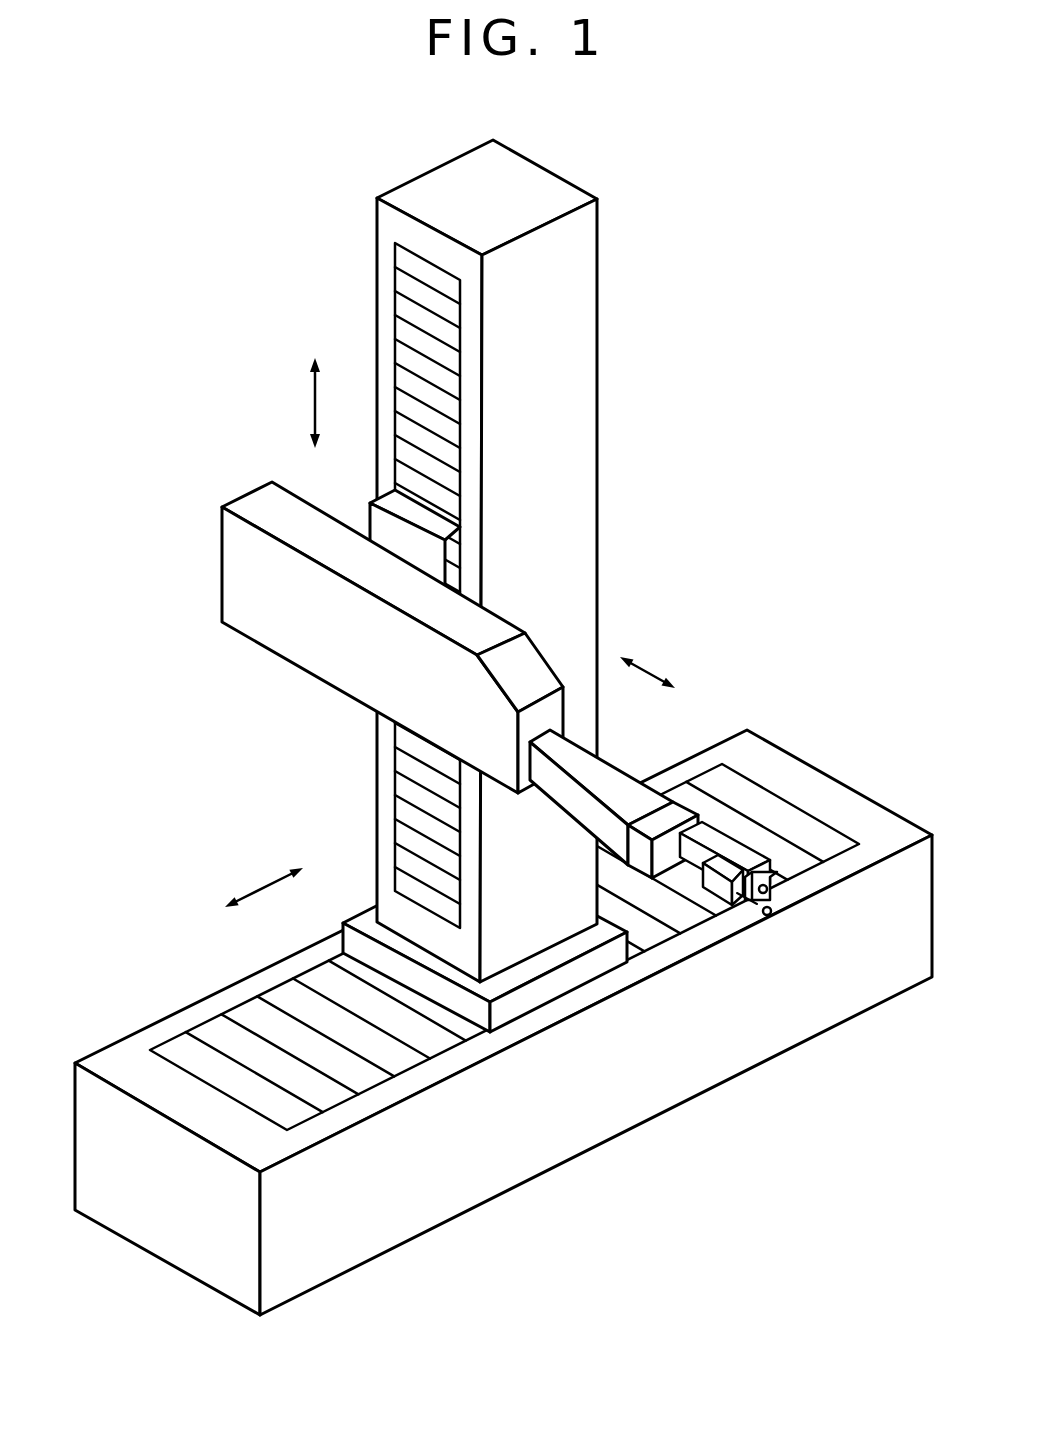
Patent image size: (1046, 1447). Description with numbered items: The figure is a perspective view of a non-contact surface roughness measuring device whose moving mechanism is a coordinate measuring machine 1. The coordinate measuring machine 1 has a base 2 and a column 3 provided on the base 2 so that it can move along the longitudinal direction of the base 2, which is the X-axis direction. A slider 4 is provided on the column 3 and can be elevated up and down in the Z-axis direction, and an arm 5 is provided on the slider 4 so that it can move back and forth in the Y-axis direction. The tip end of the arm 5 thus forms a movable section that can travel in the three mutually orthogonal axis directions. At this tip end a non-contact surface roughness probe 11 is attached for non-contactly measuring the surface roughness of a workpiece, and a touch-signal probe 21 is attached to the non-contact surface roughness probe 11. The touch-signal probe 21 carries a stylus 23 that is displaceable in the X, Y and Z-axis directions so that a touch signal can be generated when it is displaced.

The coordinate measuring machine 1 is at (98, 402).
The base 2 is at (368, 1243).
The column 3 is at (582, 480).
The slider 4 is at (262, 625).
The arm 5 is at (607, 778).
The non-contact surface roughness probe 11 is at (735, 863).
The touch-signal probe 21 is at (718, 890).
The stylus 23 is at (760, 912).